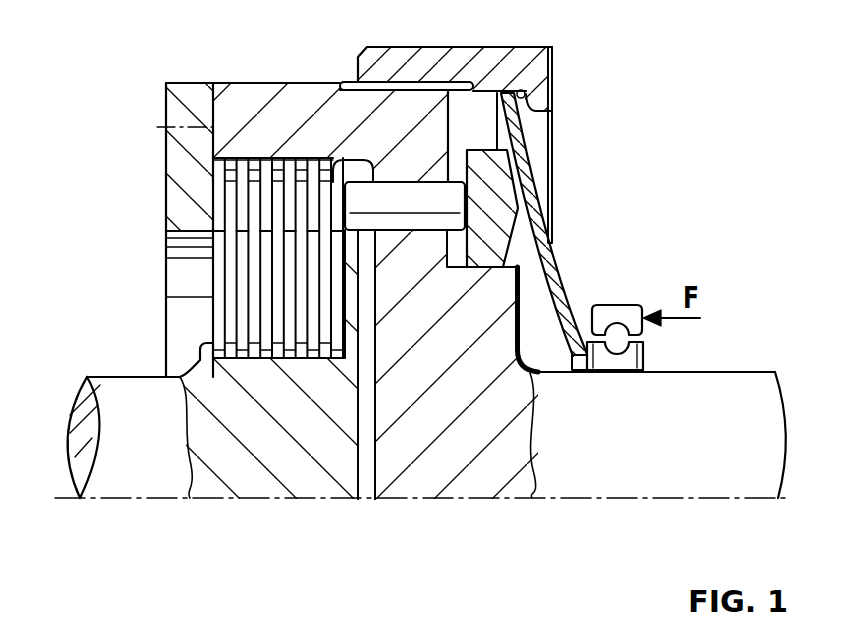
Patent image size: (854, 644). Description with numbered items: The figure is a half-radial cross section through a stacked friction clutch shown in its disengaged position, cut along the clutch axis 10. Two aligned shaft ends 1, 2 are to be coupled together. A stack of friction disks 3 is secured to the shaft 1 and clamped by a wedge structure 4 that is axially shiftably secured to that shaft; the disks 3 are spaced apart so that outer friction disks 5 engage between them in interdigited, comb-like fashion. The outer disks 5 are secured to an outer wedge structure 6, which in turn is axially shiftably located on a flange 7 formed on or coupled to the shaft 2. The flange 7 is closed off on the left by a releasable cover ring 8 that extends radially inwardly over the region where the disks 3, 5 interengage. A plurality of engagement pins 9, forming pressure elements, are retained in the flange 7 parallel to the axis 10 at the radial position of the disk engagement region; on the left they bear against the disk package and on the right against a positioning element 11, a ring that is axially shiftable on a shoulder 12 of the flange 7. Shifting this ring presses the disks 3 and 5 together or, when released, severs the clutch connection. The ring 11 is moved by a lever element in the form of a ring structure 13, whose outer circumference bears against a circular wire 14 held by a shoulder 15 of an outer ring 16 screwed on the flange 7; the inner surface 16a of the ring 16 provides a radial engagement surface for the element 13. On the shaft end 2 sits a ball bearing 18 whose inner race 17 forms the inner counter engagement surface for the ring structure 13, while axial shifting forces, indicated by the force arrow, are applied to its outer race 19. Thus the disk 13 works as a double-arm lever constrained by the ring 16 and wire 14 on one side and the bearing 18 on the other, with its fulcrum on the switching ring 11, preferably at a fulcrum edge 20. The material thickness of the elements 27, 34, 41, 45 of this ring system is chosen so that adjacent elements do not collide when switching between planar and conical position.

The shaft end 1 is at (150, 467).
The shaft end 2 is at (719, 468).
The friction disks 3 is at (220, 307).
The wedge structure 4 is at (193, 352).
The outer friction disks 5 is at (230, 207).
The outer wedge structure 6 is at (245, 163).
The flange 7 is at (232, 103).
The cover ring 8 is at (182, 155).
The engagement pins 9 is at (427, 193).
The axis 10 is at (371, 500).
The positioning element 11 is at (487, 247).
The shoulder 12 is at (467, 258).
The ring structure 13 is at (620, 231).
The circular wire 14 is at (553, 72).
The shoulder 15 is at (552, 93).
The outer ring 16 is at (441, 63).
The inner surface 16a is at (483, 88).
The inner race 17 is at (645, 355).
The ball bearing 18 is at (620, 371).
The outer race 19 is at (622, 312).
The fulcrum edge 20 is at (533, 193).
The element 27 is at (620, 231).
The element 34 is at (620, 231).
The element 41 is at (620, 231).
The element 45 is at (538, 150).